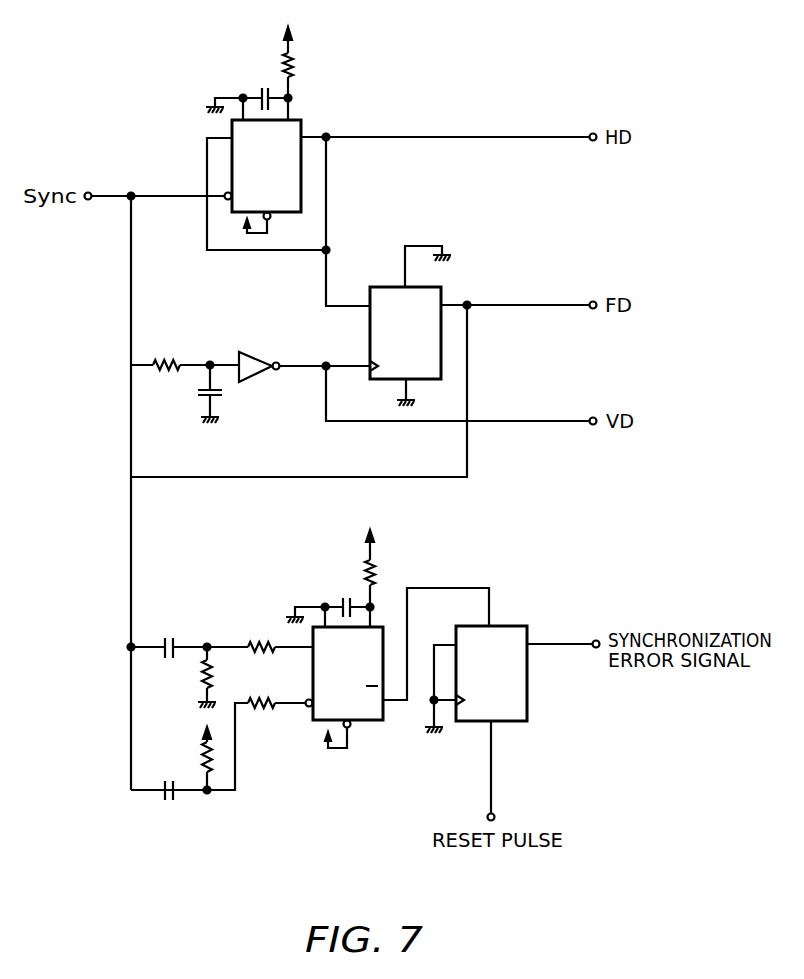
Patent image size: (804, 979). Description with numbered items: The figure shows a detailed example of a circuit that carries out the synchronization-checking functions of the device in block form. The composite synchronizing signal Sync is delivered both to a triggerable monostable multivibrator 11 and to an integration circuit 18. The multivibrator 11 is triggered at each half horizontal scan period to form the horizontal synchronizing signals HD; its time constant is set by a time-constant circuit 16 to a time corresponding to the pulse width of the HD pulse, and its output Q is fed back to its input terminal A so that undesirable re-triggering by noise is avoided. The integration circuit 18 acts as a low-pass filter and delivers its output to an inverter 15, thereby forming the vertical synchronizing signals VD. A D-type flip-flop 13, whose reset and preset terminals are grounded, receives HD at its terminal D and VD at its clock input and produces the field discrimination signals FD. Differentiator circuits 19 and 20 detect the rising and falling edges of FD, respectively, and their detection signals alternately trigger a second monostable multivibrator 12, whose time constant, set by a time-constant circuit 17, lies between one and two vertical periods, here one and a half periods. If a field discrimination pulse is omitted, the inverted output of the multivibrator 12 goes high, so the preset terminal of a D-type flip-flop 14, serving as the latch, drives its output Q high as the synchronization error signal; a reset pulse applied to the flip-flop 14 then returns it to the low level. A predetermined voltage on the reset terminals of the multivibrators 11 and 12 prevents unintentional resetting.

The monostable multivibrator 11 is at (305, 122).
The monostable multivibrator 12 is at (378, 626).
The D-type flip-flop 13 is at (445, 292).
The D-type flip-flop 14 is at (510, 625).
The inverter 15 is at (254, 352).
The time-constant circuit 16 is at (280, 74).
The time-constant circuit 17 is at (350, 587).
The integration circuit 18 is at (185, 377).
The differentiator circuit 19 is at (200, 680).
The differentiator circuit 20 is at (198, 760).